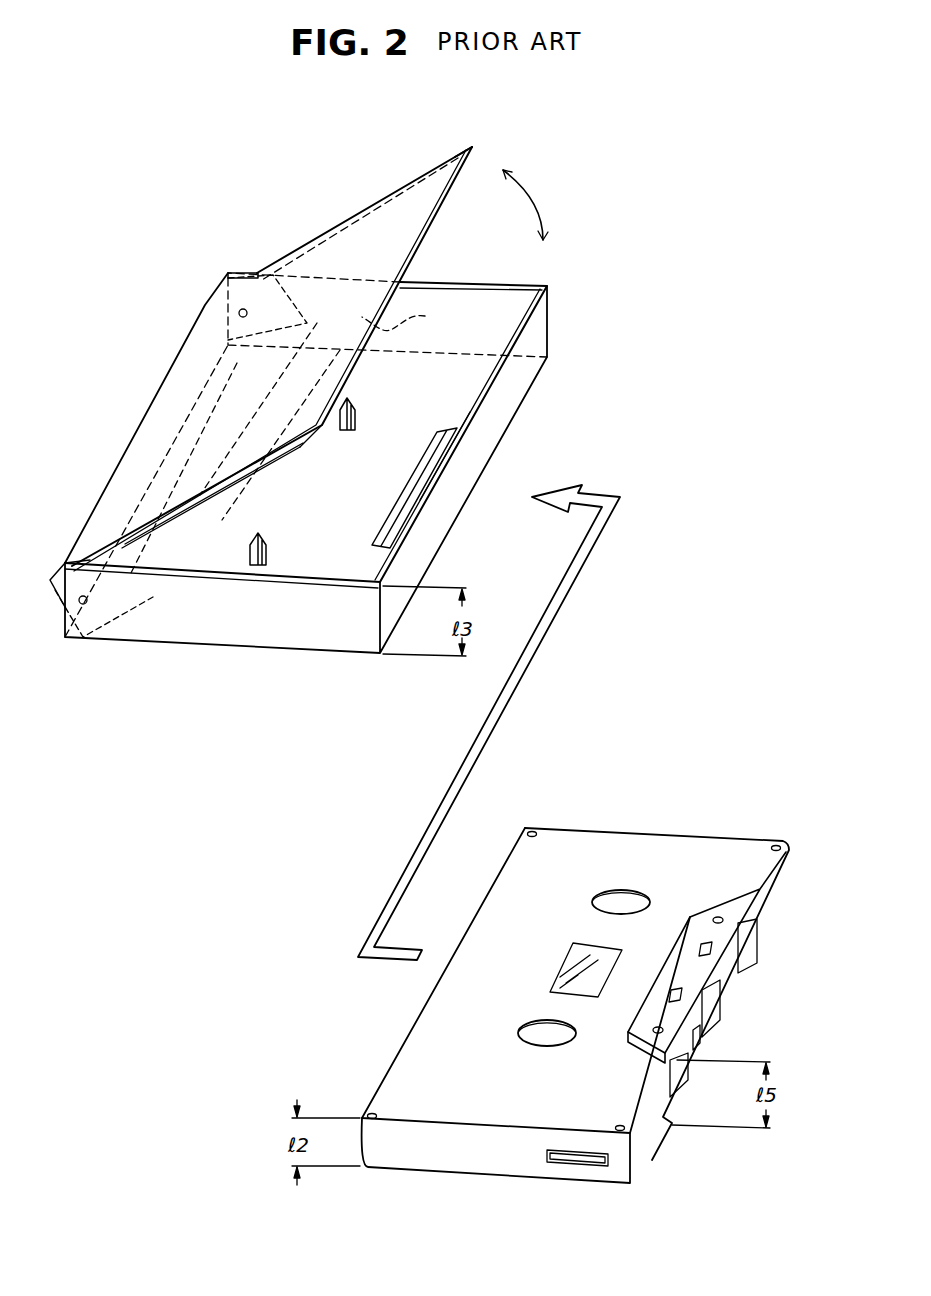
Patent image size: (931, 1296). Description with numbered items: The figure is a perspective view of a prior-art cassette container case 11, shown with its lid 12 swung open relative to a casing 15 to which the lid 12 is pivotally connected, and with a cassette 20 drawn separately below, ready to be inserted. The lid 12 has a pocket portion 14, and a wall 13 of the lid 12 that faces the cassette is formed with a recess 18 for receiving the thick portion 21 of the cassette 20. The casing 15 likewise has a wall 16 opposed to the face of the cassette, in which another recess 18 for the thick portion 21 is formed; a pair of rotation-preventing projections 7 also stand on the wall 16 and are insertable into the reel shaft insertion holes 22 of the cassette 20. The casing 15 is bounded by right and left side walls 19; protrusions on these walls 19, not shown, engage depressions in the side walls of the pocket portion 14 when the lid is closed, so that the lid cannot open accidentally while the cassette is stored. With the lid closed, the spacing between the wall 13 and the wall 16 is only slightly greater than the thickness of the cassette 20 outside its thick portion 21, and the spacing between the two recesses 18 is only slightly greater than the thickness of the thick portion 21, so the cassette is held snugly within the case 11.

The rotation-preventing projections 7 is at (356, 404).
The cassette container case 11 is at (318, 237).
The lid 12 is at (437, 166).
The wall of the lid 13 is at (385, 222).
The pocket portion 14 is at (158, 537).
The casing 15 is at (462, 506).
The wall of the casing 16 is at (458, 398).
The recess 18 is at (410, 490).
The side walls of the casing 19 is at (500, 312).
The cassette 20 is at (595, 826).
The thick portion 21 is at (693, 970).
The reel shaft insertion holes 22 is at (640, 902).